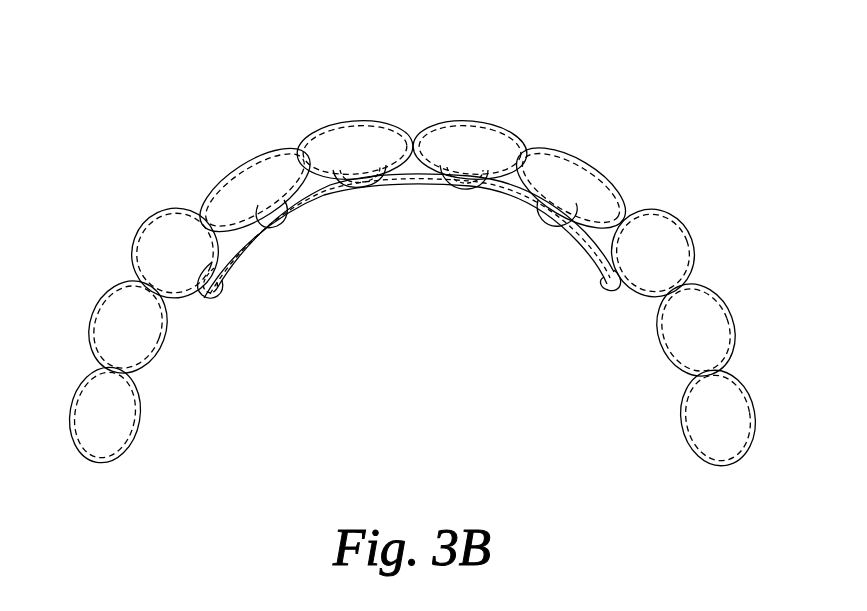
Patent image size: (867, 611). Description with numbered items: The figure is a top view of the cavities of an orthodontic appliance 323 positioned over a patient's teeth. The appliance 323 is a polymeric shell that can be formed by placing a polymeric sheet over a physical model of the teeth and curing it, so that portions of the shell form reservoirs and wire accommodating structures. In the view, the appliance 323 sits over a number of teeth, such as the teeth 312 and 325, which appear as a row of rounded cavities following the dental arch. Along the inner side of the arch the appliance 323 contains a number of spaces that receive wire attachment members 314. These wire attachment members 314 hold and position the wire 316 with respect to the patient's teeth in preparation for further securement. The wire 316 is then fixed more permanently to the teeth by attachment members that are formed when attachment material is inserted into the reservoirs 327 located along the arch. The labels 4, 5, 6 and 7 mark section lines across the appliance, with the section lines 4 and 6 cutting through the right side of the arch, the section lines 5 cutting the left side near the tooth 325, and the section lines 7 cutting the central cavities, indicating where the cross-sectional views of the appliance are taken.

The tooth 312 is at (157, 263).
The wire attachment member 314 is at (191, 285).
The wire 316 is at (437, 175).
The appliance 323 is at (160, 227).
The tooth 325 is at (238, 176).
The reservoir 327 is at (462, 190).
The section line 4 is at (667, 247).
The section line 5 is at (237, 173).
The section line 6 is at (567, 160).
The section line 7 is at (388, 122).